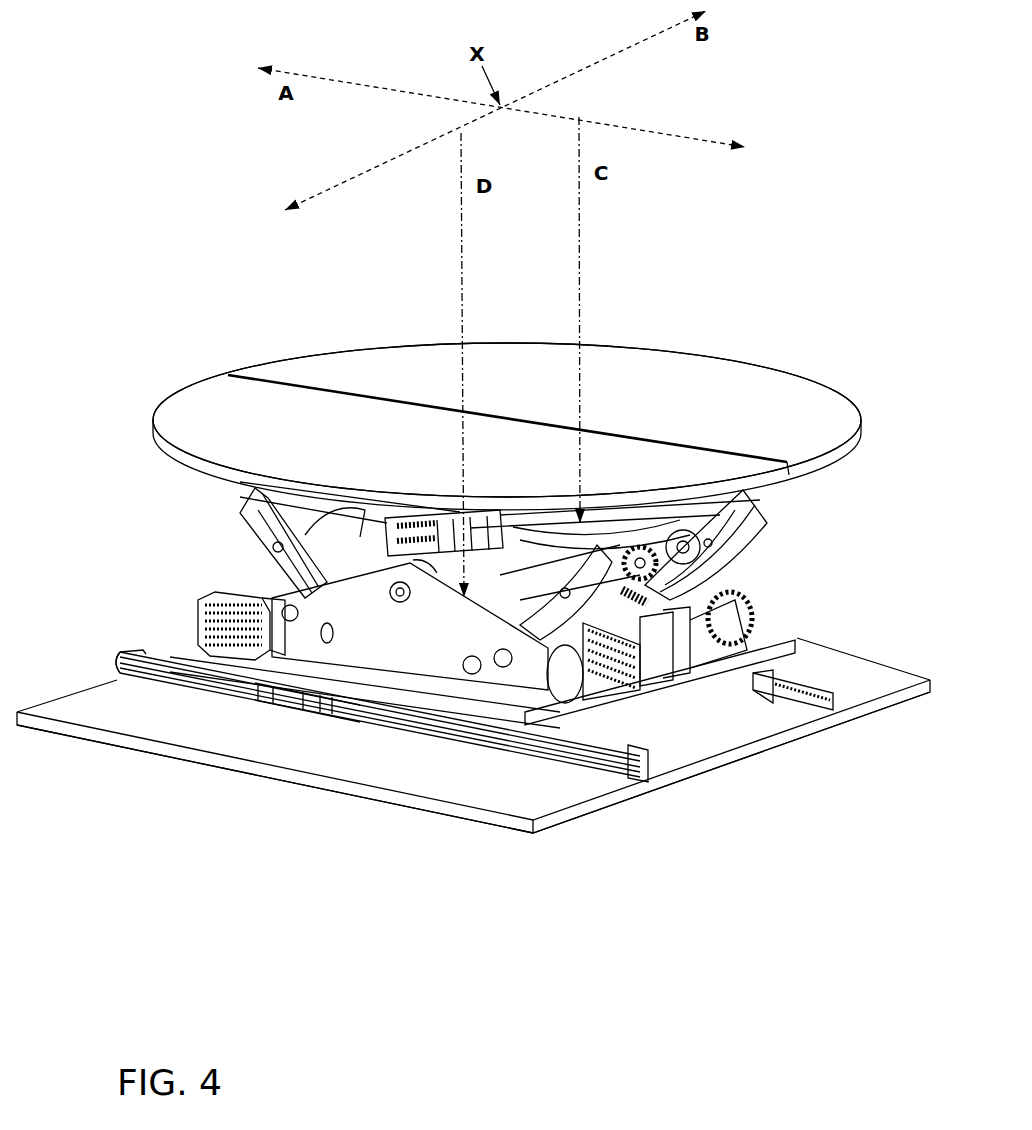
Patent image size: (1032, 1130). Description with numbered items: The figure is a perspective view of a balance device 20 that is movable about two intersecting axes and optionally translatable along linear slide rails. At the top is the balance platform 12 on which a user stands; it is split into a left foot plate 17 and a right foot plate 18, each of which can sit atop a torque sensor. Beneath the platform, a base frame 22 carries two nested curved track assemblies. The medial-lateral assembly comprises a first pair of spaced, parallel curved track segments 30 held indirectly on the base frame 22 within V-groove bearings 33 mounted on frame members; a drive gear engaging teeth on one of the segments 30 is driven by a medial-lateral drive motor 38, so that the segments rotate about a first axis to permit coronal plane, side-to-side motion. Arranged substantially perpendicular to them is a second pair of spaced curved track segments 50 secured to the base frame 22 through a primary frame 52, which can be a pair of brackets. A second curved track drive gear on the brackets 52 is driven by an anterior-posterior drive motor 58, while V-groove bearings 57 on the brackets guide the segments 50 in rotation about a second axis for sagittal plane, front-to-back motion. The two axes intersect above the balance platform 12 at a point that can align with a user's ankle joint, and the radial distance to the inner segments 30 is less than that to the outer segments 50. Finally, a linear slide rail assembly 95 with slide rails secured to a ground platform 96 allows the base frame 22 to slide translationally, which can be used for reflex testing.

The balance platform 12 is at (235, 392).
The left foot plate 17 is at (188, 415).
The right foot plate 18 is at (685, 372).
The balance device 20 is at (731, 980).
The base frame 22 is at (387, 690).
The curved track segments 30 is at (305, 520).
The V-groove bearings 33 is at (787, 713).
The medial-lateral drive motor 38 is at (273, 549).
The second pair of spaced curved track segments 50 is at (247, 515).
The primary frame 52 is at (345, 622).
The V-groove bearings 57 is at (425, 578).
The anterior-posterior drive motor 58 is at (628, 693).
The linear slide rail assembly 95 is at (105, 625).
The ground platform 96 is at (180, 753).